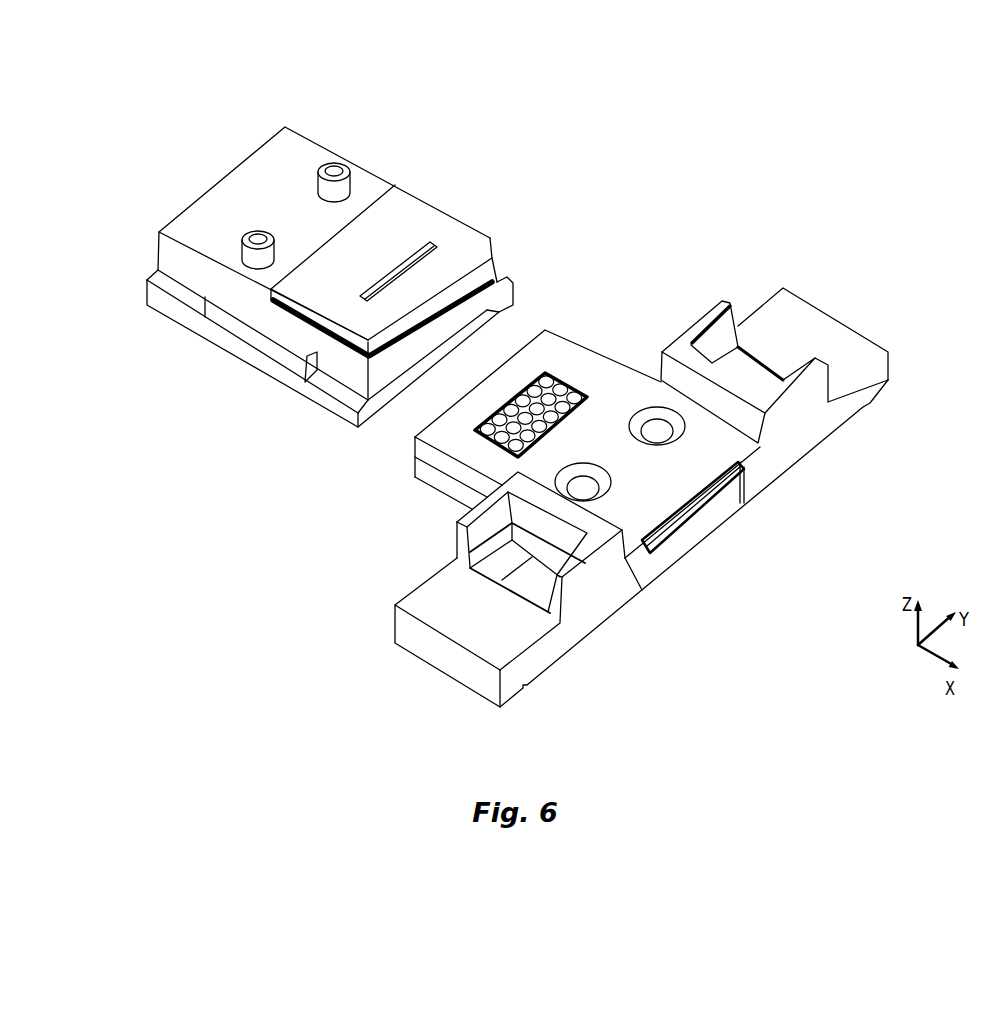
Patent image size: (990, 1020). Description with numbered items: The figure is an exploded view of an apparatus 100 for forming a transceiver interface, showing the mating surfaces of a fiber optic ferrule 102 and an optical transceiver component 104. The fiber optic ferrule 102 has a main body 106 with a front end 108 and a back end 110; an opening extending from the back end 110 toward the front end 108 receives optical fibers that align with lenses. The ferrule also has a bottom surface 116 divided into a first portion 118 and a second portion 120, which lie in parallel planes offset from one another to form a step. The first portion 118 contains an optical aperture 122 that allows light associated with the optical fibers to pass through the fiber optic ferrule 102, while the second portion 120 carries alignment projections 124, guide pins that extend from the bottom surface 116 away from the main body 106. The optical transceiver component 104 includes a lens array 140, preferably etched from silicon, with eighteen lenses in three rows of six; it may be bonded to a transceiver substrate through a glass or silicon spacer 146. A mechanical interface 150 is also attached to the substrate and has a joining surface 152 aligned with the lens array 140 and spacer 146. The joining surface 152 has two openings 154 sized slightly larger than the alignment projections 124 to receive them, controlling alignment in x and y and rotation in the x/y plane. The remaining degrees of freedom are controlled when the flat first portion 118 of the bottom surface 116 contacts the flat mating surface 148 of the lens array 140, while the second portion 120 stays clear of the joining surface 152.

The apparatus 100 is at (642, 165).
The fiber optic ferrule 102 is at (188, 317).
The optical transceiver component 104 is at (695, 208).
The main body 106 is at (318, 137).
The front end 108 is at (382, 378).
The back end 110 is at (159, 256).
The bottom surface 116 is at (262, 182).
The first portion 118 is at (415, 215).
The second portion 120 is at (368, 188).
The optical aperture 122 is at (428, 256).
The alignment projections 124 is at (240, 243).
The lens array 140 is at (622, 382).
The glass or silicon spacer 146 is at (452, 486).
The mating surface 148 is at (578, 368).
The mechanical interface 150 is at (890, 362).
The joining surface 152 is at (717, 452).
The openings 154 is at (607, 480).